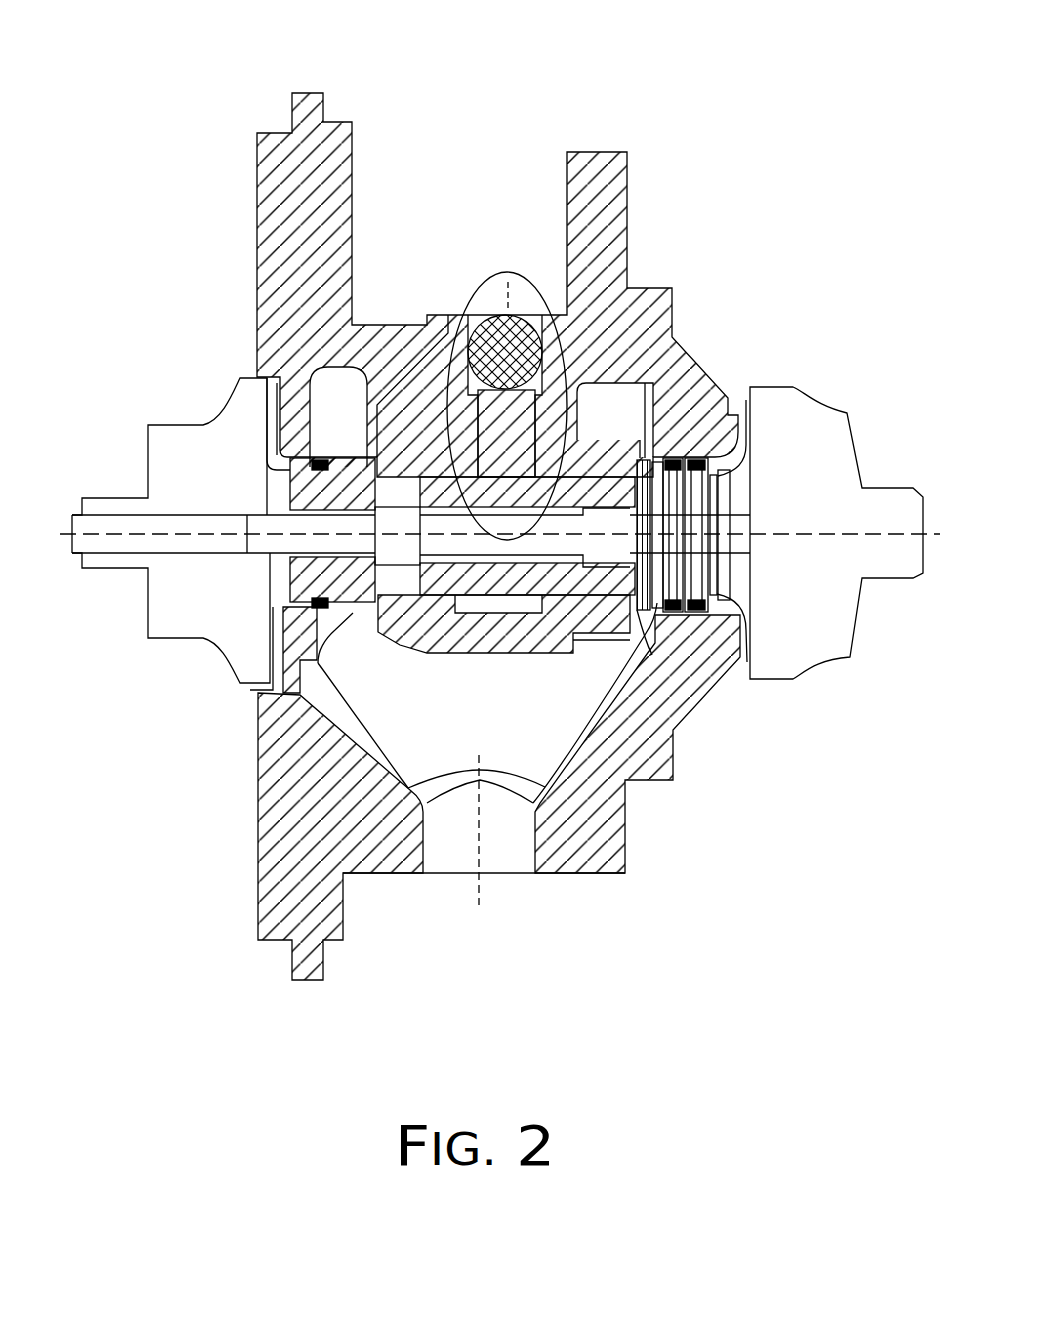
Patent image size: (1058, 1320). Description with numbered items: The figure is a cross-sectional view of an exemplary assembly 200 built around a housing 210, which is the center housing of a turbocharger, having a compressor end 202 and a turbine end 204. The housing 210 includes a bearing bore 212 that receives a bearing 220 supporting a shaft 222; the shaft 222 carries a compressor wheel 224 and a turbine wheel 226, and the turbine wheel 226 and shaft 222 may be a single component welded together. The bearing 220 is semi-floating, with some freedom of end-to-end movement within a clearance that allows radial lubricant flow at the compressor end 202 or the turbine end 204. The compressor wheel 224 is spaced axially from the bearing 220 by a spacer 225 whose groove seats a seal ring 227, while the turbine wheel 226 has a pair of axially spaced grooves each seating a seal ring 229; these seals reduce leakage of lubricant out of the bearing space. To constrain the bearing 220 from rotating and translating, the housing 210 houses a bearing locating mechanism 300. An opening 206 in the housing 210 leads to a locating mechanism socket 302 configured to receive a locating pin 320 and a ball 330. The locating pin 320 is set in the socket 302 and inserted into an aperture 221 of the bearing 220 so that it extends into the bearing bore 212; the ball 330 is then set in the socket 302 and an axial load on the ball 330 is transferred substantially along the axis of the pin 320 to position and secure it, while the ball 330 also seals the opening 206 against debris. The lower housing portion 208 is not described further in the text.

The assembly 200 is at (500, 505).
The compressor end 202 is at (209, 369).
The turbine end 204 is at (770, 351).
The opening 206 is at (545, 279).
The housing 208 is at (460, 886).
The housing 210 is at (652, 314).
The bearing bore 212 is at (438, 640).
The bearing 220 is at (632, 490).
The aperture 221 is at (527, 536).
The shaft 222 is at (411, 537).
The compressor wheel 224 is at (207, 618).
The spacer 225 is at (295, 572).
The turbine wheel 226 is at (817, 633).
The seal ring 227 is at (320, 470).
The seal ring 229 is at (713, 594).
The bearing locating mechanism 300 is at (470, 318).
The locating mechanism socket 302 is at (478, 305).
The locating pin 320 is at (506, 433).
The ball 330 is at (505, 352).